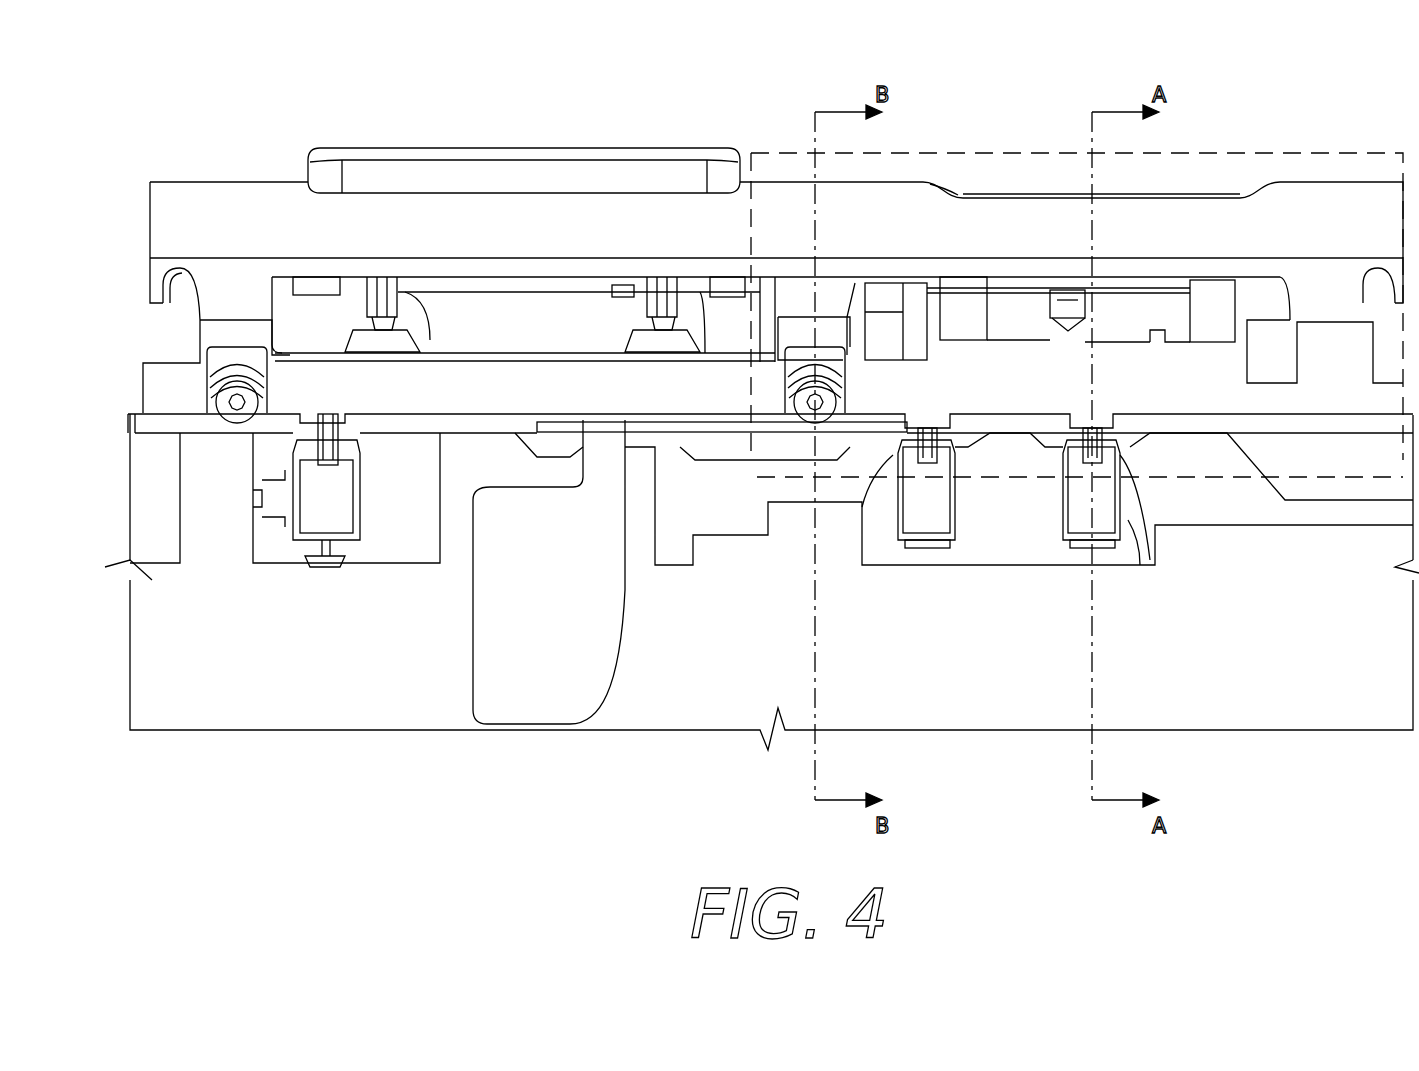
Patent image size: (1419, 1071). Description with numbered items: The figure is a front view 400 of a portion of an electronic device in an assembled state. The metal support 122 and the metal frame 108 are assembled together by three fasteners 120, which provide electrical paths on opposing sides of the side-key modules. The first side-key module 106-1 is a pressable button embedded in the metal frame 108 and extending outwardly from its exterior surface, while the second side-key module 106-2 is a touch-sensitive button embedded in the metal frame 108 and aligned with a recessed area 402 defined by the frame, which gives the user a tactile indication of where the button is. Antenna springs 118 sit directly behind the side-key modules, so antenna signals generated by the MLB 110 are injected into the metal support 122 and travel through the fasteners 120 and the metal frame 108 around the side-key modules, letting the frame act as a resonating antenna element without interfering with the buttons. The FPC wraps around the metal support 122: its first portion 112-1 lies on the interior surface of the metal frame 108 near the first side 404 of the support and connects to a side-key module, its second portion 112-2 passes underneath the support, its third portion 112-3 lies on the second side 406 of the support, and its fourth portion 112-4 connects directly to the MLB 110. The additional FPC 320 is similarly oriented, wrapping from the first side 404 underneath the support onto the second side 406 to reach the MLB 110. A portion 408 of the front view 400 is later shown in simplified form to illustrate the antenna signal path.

The front view 400 is at (146, 72).
The first side-key module 106-1 is at (500, 148).
The second side-key module 106-2 is at (1063, 297).
The metal frame 108 is at (230, 182).
The MLB 110 is at (392, 732).
The first portion of the FPC 112-1 is at (938, 283).
The second portion of the FPC 112-2 is at (903, 345).
The third portion of the FPC 112-3 is at (690, 412).
The fourth portion of the FPC 112-4 is at (473, 645).
The antenna springs 118 is at (1070, 547).
The fasteners 120 is at (790, 345).
The metal support 122 is at (167, 362).
The additional FPC 320 is at (680, 448).
The recessed area 402 is at (1056, 183).
The first side of the metal support 404 is at (1155, 328).
The second side of the metal support 406 is at (1262, 422).
The portion of the front view 408 is at (1285, 153).